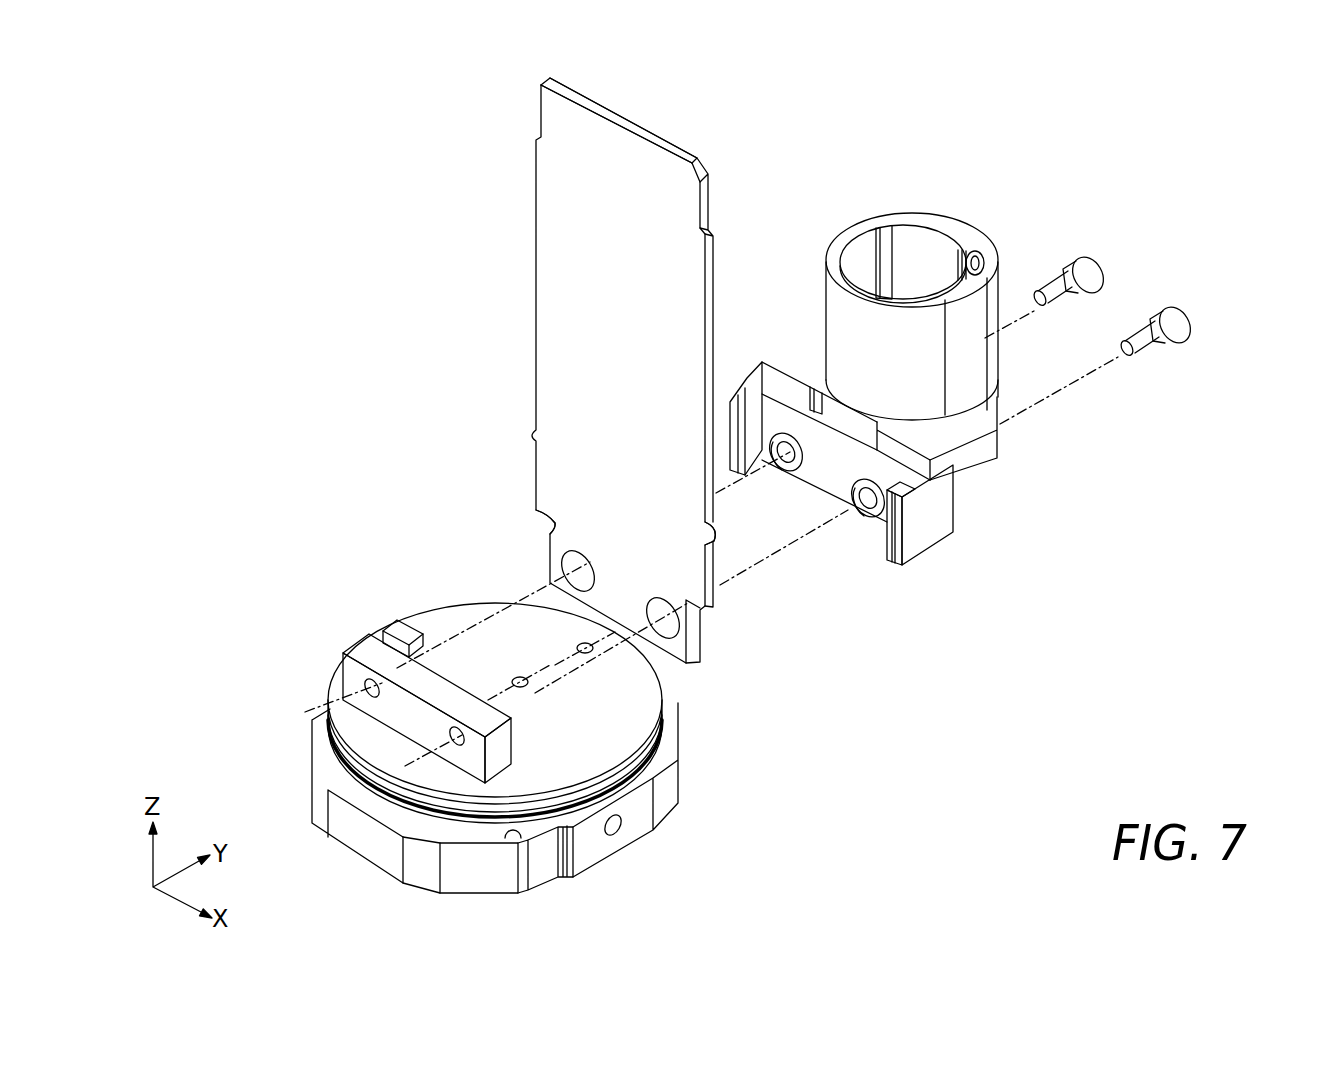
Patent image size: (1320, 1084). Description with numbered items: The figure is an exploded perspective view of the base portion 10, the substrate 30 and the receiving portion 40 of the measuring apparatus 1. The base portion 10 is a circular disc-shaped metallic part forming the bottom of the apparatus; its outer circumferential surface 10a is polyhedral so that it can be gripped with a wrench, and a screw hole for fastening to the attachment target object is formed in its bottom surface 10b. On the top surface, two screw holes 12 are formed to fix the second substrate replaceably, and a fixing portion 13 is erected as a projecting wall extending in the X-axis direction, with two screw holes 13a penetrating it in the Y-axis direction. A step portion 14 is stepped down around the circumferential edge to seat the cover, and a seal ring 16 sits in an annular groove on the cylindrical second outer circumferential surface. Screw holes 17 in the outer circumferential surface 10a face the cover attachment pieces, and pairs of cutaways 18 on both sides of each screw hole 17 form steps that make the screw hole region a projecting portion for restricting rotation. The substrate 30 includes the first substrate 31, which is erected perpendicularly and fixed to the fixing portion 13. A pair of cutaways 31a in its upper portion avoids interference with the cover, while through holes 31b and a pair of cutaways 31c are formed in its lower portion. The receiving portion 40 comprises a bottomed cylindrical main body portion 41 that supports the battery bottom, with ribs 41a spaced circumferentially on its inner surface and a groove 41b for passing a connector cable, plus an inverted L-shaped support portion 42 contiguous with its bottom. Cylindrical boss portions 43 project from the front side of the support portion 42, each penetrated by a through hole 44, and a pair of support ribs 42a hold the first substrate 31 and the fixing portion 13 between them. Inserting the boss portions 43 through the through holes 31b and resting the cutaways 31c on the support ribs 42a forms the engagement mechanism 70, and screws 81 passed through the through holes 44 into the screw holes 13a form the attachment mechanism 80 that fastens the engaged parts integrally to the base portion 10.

The measuring apparatus 1 is at (1170, 127).
The base portion 10 is at (680, 787).
The outer circumferential surface 10a is at (363, 846).
The bottom surface 10b is at (450, 901).
The screw holes 12 is at (650, 648).
The fixing portion 13 is at (417, 664).
The screw holes 13a is at (364, 688).
The step portion 14 is at (515, 838).
The seal ring 16 is at (668, 770).
The screw holes 17 is at (621, 830).
The cutaways 18 is at (561, 866).
The substrate 30 is at (535, 233).
The first substrate 31 is at (600, 379).
The cutaways 31a is at (538, 108).
The through holes 31b is at (563, 570).
The cutaways 31c is at (534, 522).
The receiving portion 40 is at (957, 211).
The main body portion 41 is at (868, 222).
The ribs 41a is at (903, 248).
The groove 41b is at (982, 257).
The support portion 42 is at (935, 440).
The support ribs 42a is at (733, 440).
The boss portions 43 is at (792, 430).
The through holes 44 is at (802, 456).
The engagement mechanism 70 is at (836, 612).
The attachment mechanism 80 is at (1092, 242).
The screws 81 is at (1106, 268).